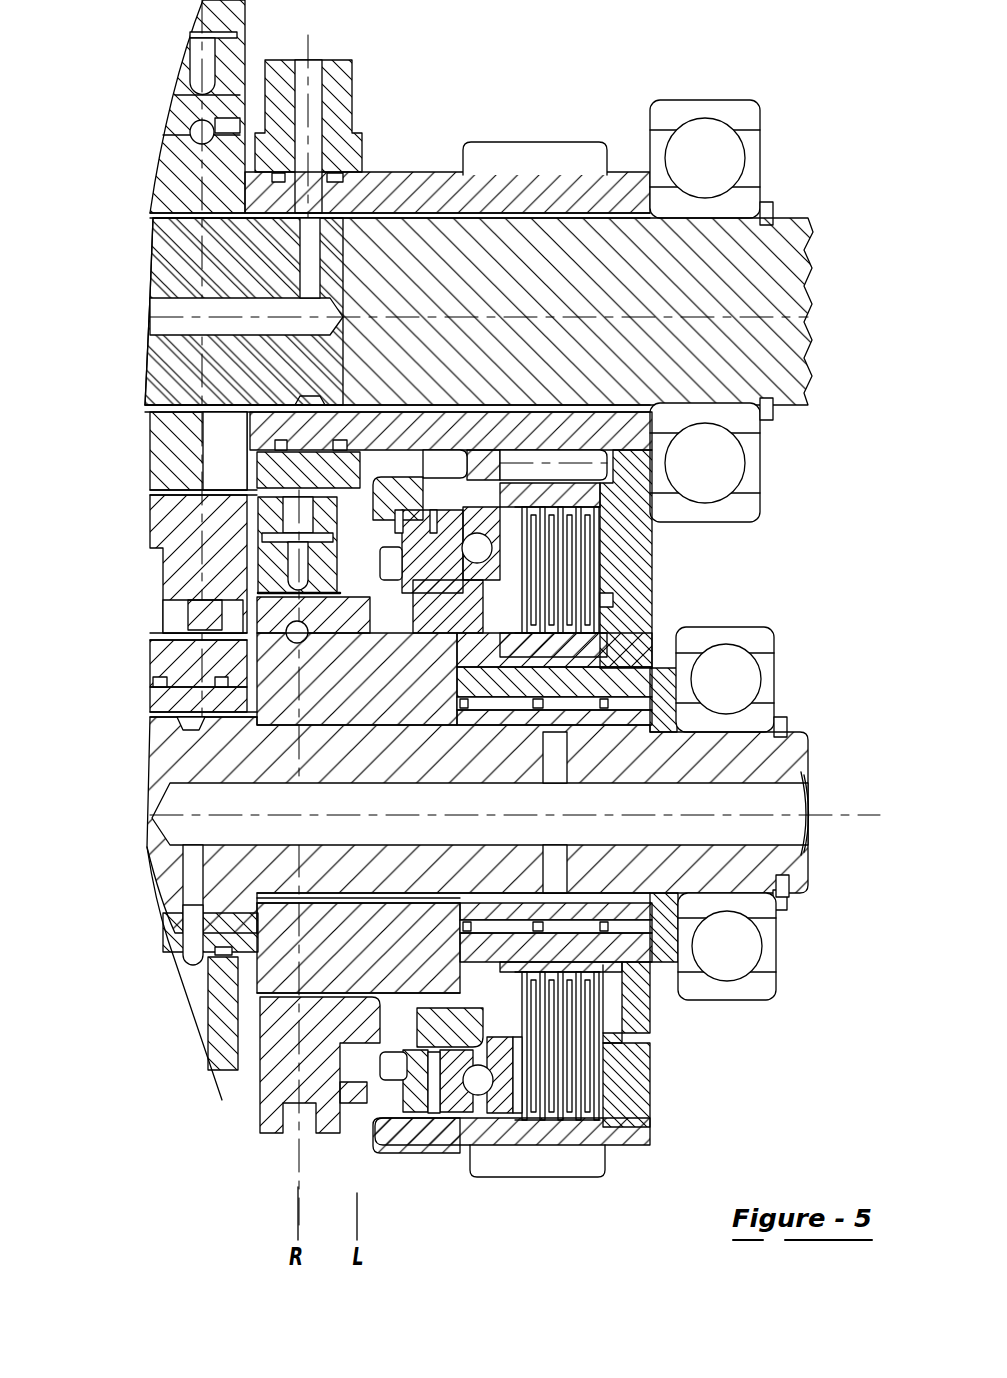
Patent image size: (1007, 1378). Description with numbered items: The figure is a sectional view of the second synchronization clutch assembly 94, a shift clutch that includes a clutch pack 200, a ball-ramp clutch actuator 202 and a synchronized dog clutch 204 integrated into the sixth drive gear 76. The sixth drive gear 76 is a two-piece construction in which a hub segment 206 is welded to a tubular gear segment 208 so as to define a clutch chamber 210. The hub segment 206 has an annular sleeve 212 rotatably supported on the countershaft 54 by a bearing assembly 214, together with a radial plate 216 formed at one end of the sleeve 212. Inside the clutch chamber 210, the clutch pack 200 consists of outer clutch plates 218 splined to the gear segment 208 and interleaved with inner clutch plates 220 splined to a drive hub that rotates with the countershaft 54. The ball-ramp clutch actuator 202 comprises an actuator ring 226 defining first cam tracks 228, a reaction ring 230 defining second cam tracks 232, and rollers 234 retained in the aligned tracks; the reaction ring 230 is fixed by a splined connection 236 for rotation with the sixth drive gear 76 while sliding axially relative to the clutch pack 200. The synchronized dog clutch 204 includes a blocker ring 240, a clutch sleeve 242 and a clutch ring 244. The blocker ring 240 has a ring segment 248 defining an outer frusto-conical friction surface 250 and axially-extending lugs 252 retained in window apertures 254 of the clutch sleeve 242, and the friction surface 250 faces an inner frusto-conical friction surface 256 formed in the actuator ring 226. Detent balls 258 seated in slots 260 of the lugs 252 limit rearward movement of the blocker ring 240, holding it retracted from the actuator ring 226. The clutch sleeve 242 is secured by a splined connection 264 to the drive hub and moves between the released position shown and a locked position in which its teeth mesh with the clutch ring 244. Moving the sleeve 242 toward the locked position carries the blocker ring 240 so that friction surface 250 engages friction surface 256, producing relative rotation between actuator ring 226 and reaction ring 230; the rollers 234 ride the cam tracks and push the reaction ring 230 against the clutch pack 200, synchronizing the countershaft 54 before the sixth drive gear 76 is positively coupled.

The countershaft 54 is at (780, 762).
The sixth drive gear 76 is at (593, 1170).
The second synchronization clutch assembly 94 is at (256, 1146).
The clutch pack 200 is at (612, 612).
The ball-ramp clutch actuator 202 is at (473, 1115).
The synchronized dog clutch 204 is at (263, 1062).
The hub segment 206 is at (606, 1031).
The tubular gear segment 208 is at (612, 1140).
The clutch chamber 210 is at (528, 618).
The annular sleeve 212 is at (497, 695).
The bearing assembly 214 is at (608, 700).
The radial plate 216 is at (632, 1077).
The outer clutch plates 218 is at (540, 512).
The inner clutch plates 220 is at (560, 1018).
The actuator ring 226 is at (505, 1130).
The first cam tracks 228 is at (478, 1097).
The reaction ring 230 is at (525, 505).
The second cam tracks 232 is at (477, 532).
The rollers 234 is at (423, 500).
The splined connection 236 is at (510, 1092).
The blocker ring 240 is at (346, 620).
The clutch sleeve 242 is at (285, 1027).
The clutch ring 244 is at (412, 1085).
The ring segment 248 is at (437, 1020).
The outer frusto-conical friction surface 250 is at (447, 575).
The lugs 252 is at (298, 645).
The window apertures 254 is at (257, 612).
The inner frusto-conical friction surface 256 is at (500, 960).
The detent balls 258 is at (258, 697).
The slots 260 is at (286, 635).
The splined connection 264 is at (320, 990).